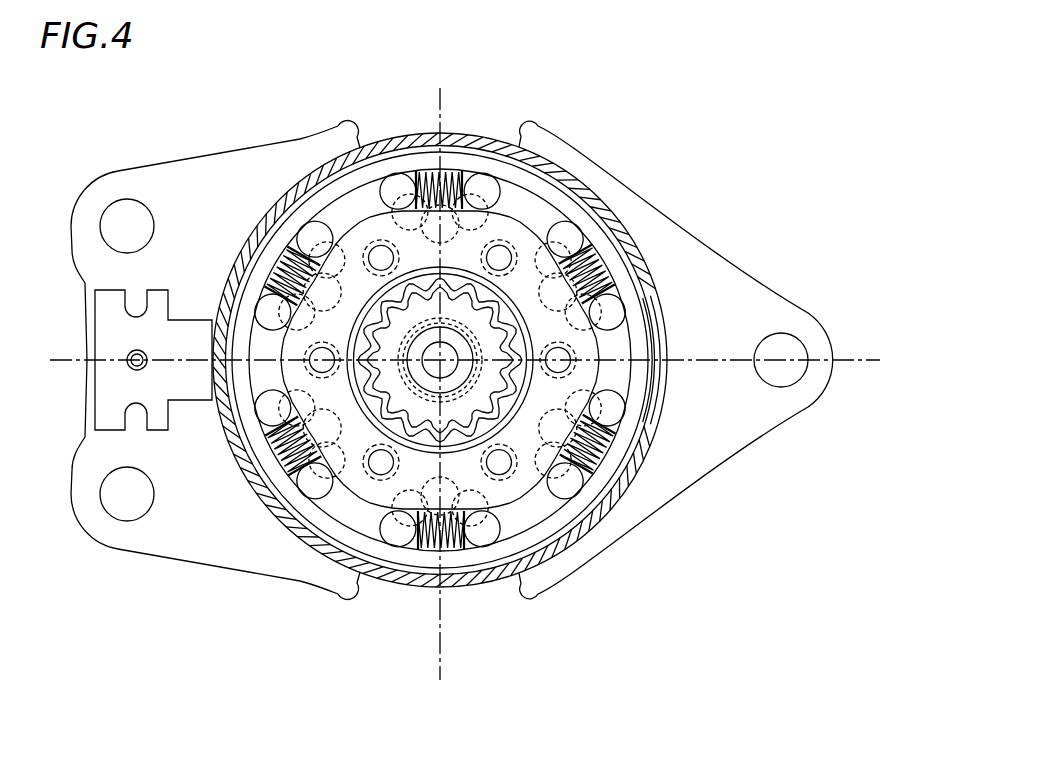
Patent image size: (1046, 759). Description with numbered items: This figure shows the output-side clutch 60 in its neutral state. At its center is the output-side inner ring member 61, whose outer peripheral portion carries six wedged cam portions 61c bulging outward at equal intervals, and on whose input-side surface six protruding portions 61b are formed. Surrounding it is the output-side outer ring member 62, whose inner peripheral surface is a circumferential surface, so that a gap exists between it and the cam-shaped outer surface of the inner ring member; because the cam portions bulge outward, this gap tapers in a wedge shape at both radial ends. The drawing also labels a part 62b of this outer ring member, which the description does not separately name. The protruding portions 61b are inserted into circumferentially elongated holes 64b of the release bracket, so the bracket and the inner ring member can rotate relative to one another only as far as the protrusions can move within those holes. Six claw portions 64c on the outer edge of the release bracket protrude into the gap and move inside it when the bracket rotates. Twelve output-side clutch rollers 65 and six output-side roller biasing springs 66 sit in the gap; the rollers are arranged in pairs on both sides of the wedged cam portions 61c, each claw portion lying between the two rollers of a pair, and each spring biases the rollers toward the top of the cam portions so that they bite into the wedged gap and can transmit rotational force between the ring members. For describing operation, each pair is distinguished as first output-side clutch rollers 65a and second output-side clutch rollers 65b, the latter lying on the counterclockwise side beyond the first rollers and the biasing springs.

The output-side clutch 60 is at (262, 188).
The output-side outer ring member 62 is at (327, 188).
The housing right arm 62b is at (652, 398).
The output-side inner ring member 61 is at (520, 235).
The protruding portions 61b is at (372, 462).
The wedged cam portions 61c is at (365, 505).
The elongated holes 64b is at (352, 465).
The claw portions 64c is at (543, 537).
The output-side clutch rollers 65 is at (387, 328).
The first output-side clutch rollers 65a is at (393, 175).
The second output-side clutch rollers 65b is at (487, 174).
The output-side roller biasing springs 66 is at (449, 169).